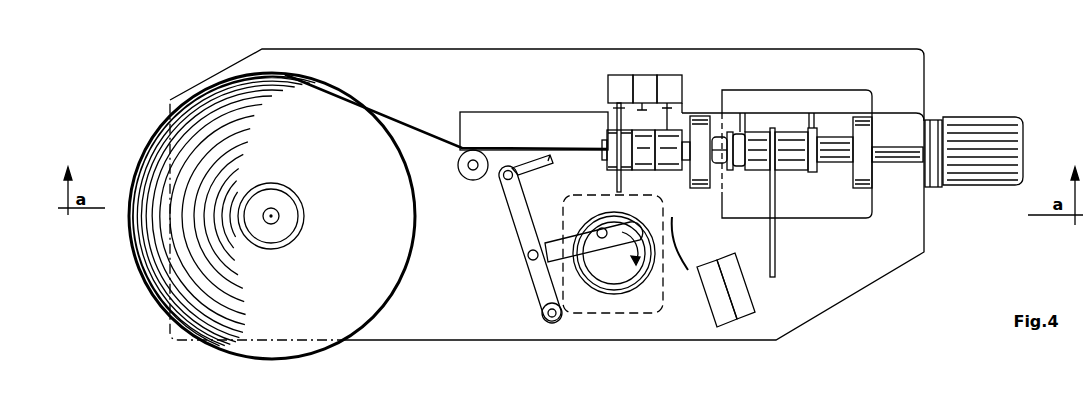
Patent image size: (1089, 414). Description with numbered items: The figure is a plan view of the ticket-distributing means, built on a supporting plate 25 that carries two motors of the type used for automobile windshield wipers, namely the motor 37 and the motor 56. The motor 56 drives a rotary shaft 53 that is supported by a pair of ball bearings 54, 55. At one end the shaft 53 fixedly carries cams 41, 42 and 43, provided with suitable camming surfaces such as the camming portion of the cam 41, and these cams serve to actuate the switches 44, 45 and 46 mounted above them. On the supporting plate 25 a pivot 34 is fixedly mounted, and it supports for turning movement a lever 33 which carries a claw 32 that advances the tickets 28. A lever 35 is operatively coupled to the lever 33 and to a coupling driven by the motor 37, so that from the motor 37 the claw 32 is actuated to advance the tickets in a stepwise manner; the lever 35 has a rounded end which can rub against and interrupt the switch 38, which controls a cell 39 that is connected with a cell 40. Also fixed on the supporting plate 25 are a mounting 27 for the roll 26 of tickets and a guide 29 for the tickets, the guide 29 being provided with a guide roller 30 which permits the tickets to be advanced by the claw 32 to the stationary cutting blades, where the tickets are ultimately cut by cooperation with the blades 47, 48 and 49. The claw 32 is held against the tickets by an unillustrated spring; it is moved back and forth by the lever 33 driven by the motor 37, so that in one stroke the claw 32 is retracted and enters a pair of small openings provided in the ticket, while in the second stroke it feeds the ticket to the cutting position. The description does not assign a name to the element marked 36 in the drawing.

The supporting plate 25 is at (365, 64).
The roll of tickets 26 is at (168, 113).
The mounting 27 is at (304, 205).
The tickets 28 is at (406, 117).
The guide 29 is at (501, 143).
The guide roller 30 is at (472, 181).
The claw 32 is at (537, 170).
The lever 33 is at (523, 248).
The pivot 34 is at (543, 320).
The lever 35 is at (587, 242).
The roller 36 is at (622, 280).
The motor 37 is at (643, 315).
The switch 38 is at (688, 272).
The cell 39 is at (722, 317).
The cell 40 is at (743, 310).
The cam 41 is at (618, 128).
The cam 42 is at (648, 172).
The cam 43 is at (672, 172).
The switch 44 is at (620, 82).
The switch 45 is at (648, 82).
The switch 46 is at (668, 82).
The blade 47 is at (742, 128).
The blade 48 is at (775, 128).
The blade 49 is at (810, 128).
The rotary shaft 53 is at (835, 138).
The ball bearing 54 is at (700, 114).
The ball bearing 55 is at (868, 117).
The motor 56 is at (977, 117).